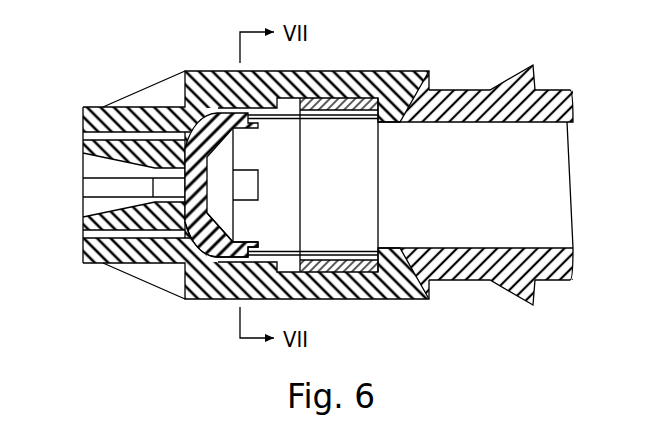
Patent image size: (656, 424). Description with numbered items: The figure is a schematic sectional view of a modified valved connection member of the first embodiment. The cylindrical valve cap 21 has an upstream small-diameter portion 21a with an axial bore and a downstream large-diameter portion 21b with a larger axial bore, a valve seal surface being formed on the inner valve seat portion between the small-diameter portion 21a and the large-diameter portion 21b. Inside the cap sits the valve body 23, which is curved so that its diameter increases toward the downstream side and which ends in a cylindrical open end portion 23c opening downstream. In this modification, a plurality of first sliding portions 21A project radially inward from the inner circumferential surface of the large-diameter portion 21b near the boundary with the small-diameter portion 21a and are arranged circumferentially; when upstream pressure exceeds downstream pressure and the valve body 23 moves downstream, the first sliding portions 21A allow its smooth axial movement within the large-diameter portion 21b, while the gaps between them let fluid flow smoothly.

The valve cap 21 is at (198, 69).
The small-diameter portion 21a is at (126, 96).
The first sliding portions 21A is at (303, 97).
The large-diameter portion 21b is at (372, 71).
The valve body 23 is at (211, 263).
The open end portion 23c is at (264, 247).